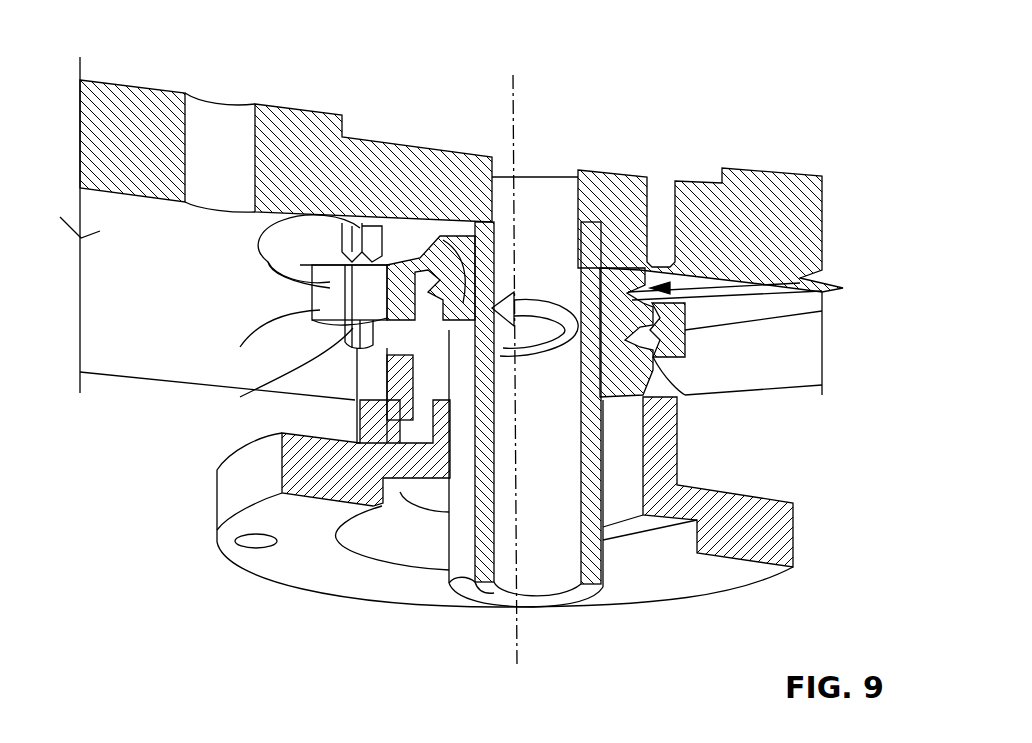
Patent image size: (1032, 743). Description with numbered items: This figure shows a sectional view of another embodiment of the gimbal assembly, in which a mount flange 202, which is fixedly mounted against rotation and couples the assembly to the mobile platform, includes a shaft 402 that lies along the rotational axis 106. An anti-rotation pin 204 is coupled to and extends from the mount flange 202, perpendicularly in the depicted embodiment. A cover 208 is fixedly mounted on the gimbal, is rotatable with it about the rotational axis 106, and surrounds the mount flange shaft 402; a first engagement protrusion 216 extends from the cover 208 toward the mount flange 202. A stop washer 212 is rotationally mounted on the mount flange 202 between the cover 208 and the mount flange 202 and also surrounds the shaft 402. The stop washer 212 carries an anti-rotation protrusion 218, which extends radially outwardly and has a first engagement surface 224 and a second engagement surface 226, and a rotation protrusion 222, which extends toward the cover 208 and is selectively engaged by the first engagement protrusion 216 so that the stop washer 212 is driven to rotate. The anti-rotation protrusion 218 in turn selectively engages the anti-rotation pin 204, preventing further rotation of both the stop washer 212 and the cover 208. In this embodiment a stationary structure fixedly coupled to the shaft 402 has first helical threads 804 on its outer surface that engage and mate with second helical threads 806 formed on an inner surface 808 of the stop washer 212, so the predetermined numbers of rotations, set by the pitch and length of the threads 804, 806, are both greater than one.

The rotational axis 106 is at (512, 123).
The mount flange 202 is at (823, 221).
The anti-rotation pin 204 is at (350, 260).
The cover 208 is at (794, 537).
The stop washer 212 is at (780, 320).
The first engagement protrusion 216 is at (422, 398).
The anti-rotation protrusion 218 is at (323, 325).
The rotation protrusion 222 is at (353, 330).
The first engagement surface 224 is at (352, 362).
The second engagement surface 226 is at (381, 266).
The shaft 402 is at (590, 597).
The first helical threads 804 is at (670, 288).
The second helical threads 806 is at (462, 246).
The inner surface 808 is at (653, 350).